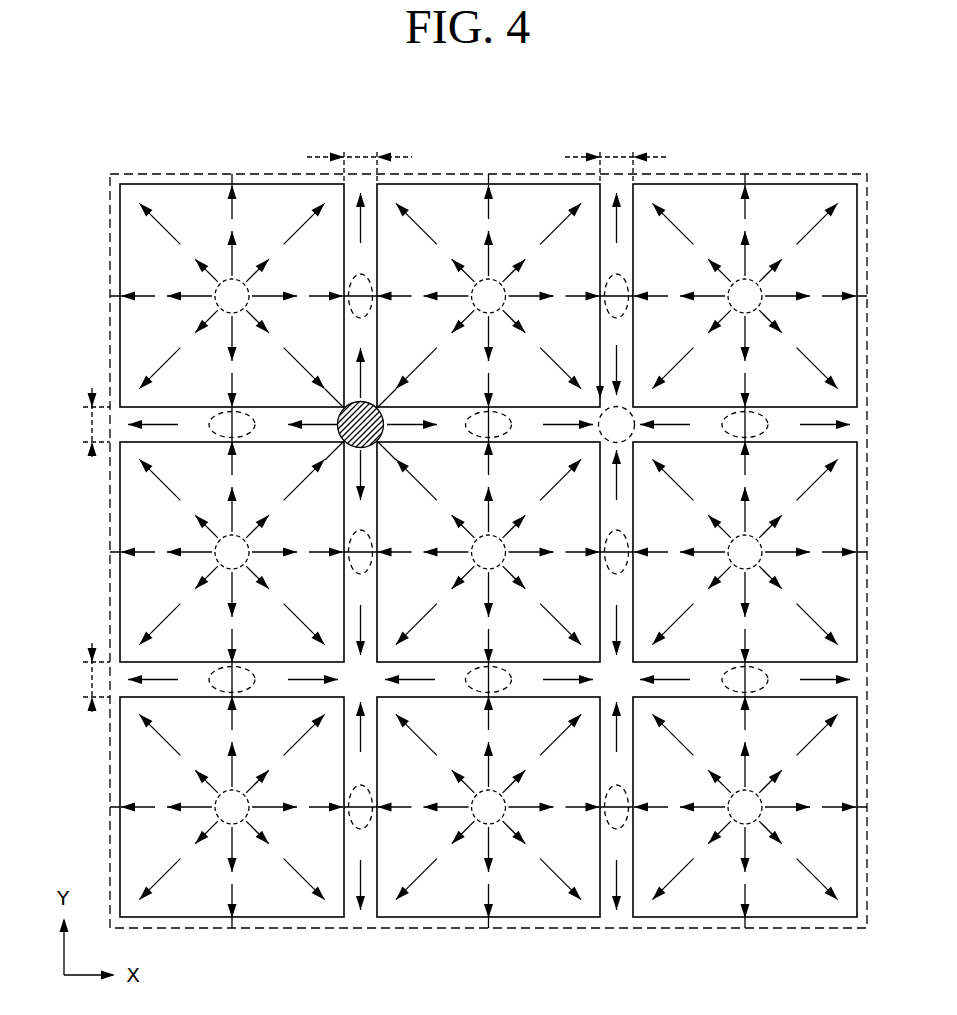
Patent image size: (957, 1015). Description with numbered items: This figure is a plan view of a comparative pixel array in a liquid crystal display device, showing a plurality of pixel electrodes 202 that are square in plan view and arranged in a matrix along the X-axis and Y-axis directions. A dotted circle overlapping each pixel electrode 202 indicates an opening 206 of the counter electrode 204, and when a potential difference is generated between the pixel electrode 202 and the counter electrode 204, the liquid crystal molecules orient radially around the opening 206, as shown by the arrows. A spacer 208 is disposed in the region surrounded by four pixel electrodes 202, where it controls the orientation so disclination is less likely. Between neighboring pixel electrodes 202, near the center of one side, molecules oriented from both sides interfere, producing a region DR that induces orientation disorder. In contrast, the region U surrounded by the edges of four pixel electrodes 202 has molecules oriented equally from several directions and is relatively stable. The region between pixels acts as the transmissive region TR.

The pixel electrode 202 is at (450, 196).
The counter electrode 204 is at (527, 172).
The opening 206 is at (491, 280).
The spacer 208 is at (338, 414).
The region DR is at (503, 412).
The region U is at (632, 411).
The transmissive region TR is at (360, 423).